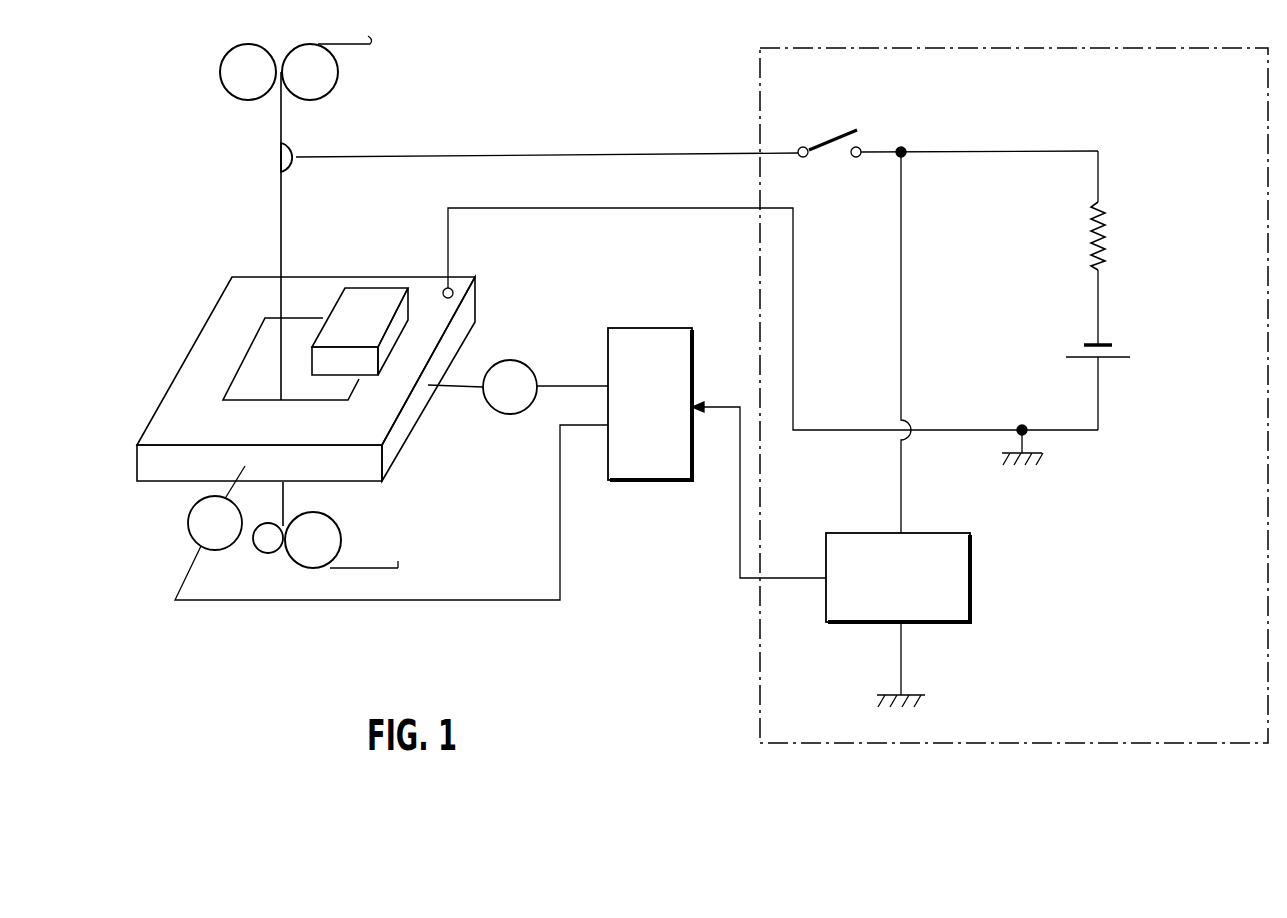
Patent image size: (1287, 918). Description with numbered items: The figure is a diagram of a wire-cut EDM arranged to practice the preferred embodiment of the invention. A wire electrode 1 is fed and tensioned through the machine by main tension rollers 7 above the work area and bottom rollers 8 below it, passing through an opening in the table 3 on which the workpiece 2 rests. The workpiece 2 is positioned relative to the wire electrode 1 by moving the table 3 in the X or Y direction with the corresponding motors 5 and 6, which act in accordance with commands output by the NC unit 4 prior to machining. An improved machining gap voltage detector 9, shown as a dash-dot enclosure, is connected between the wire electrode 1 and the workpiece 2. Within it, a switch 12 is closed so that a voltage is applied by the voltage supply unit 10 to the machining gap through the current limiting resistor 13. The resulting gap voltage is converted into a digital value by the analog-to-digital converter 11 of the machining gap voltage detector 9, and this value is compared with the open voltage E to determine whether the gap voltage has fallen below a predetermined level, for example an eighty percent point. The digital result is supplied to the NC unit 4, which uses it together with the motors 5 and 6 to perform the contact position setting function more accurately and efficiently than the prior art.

The wire electrode 1 is at (280, 218).
The workpiece 2 is at (370, 295).
The table 3 is at (217, 322).
The NC unit 4 is at (608, 338).
The motor 5 is at (522, 360).
The motor 6 is at (188, 528).
The main tension rollers 7 is at (322, 87).
The bottom rollers 8 is at (332, 548).
The machining gap voltage detector 9 is at (928, 45).
The voltage supply unit 10 is at (1116, 352).
The analog-to-digital converter 11 is at (922, 533).
The switch 12 is at (822, 138).
The current limiting resistor 13 is at (1106, 241).